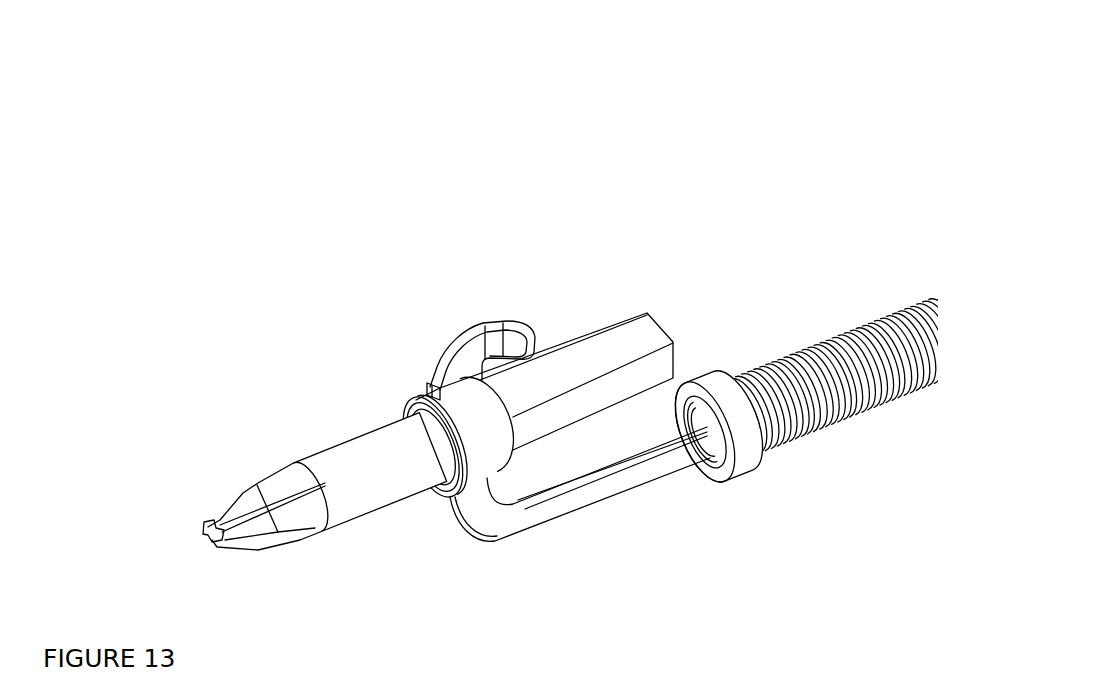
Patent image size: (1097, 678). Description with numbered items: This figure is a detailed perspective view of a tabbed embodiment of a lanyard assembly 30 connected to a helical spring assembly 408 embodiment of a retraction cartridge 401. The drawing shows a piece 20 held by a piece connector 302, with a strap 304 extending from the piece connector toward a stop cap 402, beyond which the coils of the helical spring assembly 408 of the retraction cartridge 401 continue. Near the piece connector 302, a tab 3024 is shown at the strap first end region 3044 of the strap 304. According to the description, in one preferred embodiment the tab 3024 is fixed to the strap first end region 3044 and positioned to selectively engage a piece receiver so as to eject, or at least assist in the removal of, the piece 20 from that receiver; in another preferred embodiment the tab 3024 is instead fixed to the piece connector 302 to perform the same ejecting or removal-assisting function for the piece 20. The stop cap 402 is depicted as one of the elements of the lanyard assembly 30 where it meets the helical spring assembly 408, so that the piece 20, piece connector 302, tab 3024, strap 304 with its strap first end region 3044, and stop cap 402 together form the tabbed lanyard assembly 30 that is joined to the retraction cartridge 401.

The retraction cartridge 401 is at (428, 205).
The piece 20 is at (357, 458).
The tab 3024 is at (517, 335).
The helical spring assembly 408 is at (842, 350).
The stop cap 402 is at (757, 453).
The lanyard assembly 30 is at (698, 512).
The piece connector 302 is at (482, 428).
The strap 304 is at (597, 492).
The strap first end region 3044 is at (502, 525).